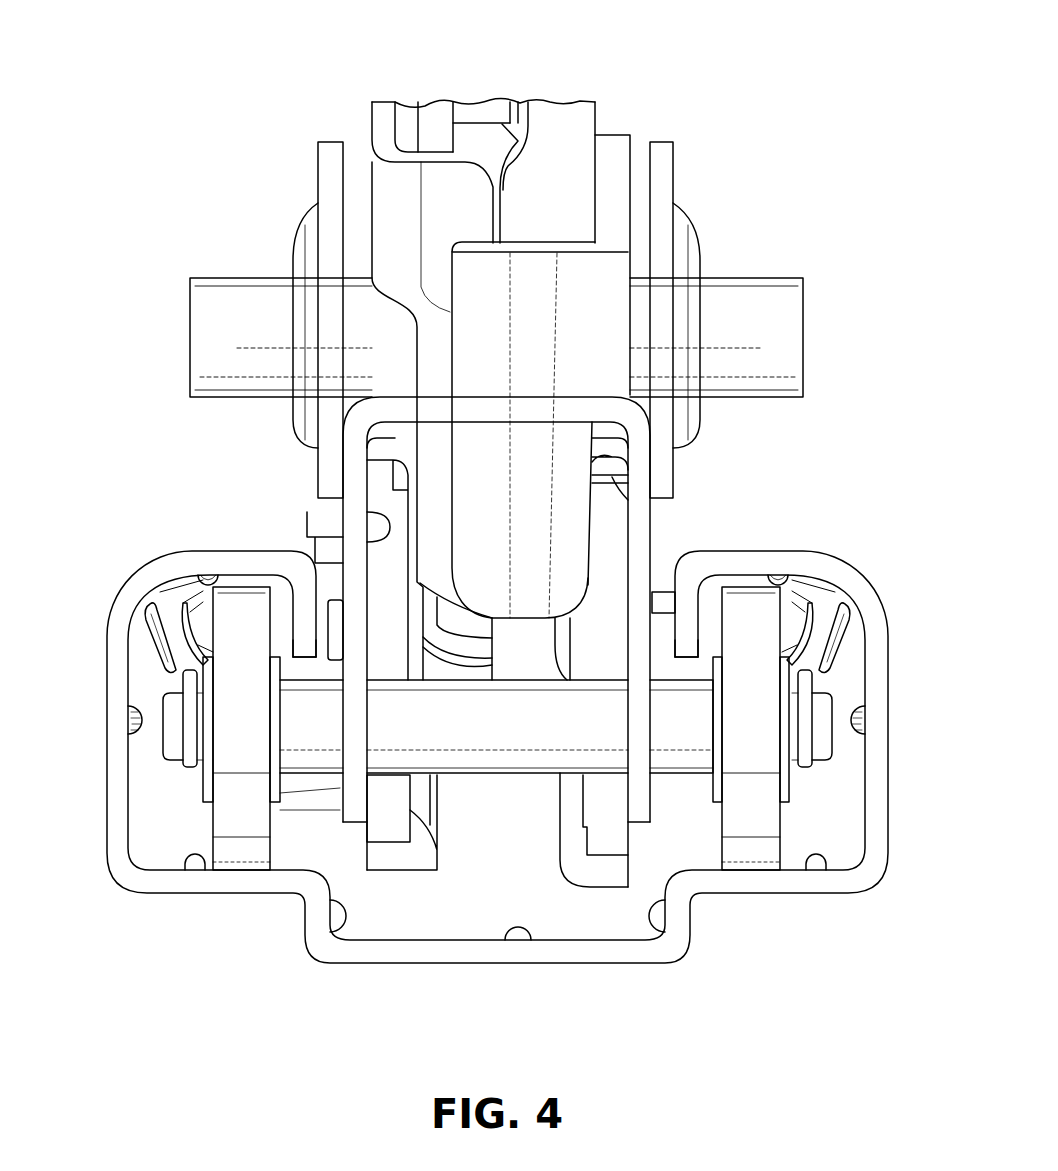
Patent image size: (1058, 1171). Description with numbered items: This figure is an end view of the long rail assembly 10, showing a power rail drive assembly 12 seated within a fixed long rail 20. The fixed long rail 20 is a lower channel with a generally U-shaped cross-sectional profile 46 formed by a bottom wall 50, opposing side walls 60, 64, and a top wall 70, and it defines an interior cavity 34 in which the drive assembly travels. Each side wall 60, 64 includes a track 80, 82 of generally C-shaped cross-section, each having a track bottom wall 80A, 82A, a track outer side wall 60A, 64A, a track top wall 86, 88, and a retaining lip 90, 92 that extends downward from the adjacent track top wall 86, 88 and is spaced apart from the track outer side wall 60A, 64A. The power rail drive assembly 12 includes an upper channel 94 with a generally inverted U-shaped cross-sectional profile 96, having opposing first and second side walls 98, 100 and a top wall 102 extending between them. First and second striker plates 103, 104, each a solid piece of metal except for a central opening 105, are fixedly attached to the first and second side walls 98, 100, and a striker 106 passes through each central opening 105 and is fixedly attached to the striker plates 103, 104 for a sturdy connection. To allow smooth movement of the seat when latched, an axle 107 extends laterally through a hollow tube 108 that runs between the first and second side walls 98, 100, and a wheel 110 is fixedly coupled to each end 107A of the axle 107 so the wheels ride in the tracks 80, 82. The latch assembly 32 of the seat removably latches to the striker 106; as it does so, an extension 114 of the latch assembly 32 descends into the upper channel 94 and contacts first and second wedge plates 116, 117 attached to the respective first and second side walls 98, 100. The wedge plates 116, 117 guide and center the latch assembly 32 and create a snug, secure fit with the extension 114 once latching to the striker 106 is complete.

The long rail assembly 10 is at (143, 181).
The power rail drive assembly 12 is at (673, 541).
The fixed long rail 20 is at (878, 886).
The latch assembly 32 is at (368, 118).
The interior cavity 34 is at (465, 895).
The generally U-shaped cross-sectional profile 46 is at (183, 568).
The bottom wall 50 is at (528, 935).
The side wall 60 is at (345, 935).
The track outer side wall 60A is at (128, 720).
The side wall 64 is at (860, 855).
The track outer side wall 64A is at (857, 720).
The top wall 70 is at (208, 574).
The track 80 is at (163, 828).
The track bottom wall 80A is at (198, 862).
The track 82 is at (813, 797).
The track bottom wall 82A is at (815, 852).
The track top wall 86 is at (207, 575).
The track top wall 88 is at (787, 575).
The retaining lip 90 is at (306, 611).
The retaining lip 92 is at (688, 612).
The upper channel 94 is at (642, 410).
The generally inverted U-shaped cross-sectional profile 96 is at (650, 525).
The first side wall 98 is at (613, 476).
The second side wall 100 is at (370, 513).
The top wall 102 is at (318, 470).
The first striker plate 103 is at (686, 232).
The second striker plate 104 is at (318, 232).
The central opening 105 is at (700, 272).
The striker 106 is at (213, 330).
The axle 107 is at (200, 790).
The end of the axle 107A is at (832, 713).
The hollow tube 108 is at (510, 730).
The wheel 110 is at (211, 836).
The extension 114 is at (535, 452).
The first wedge plate 116 is at (605, 860).
The second wedge plate 117 is at (393, 845).